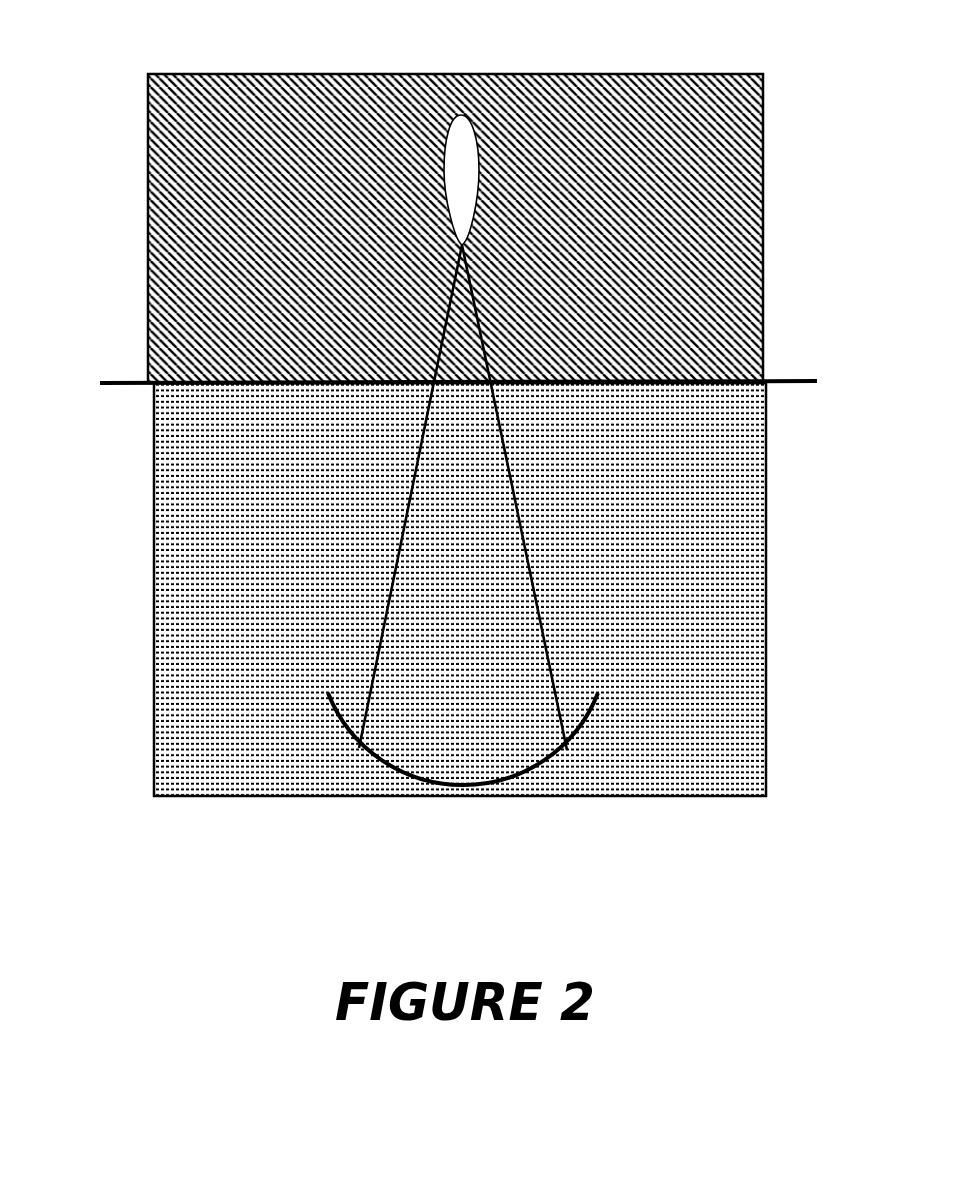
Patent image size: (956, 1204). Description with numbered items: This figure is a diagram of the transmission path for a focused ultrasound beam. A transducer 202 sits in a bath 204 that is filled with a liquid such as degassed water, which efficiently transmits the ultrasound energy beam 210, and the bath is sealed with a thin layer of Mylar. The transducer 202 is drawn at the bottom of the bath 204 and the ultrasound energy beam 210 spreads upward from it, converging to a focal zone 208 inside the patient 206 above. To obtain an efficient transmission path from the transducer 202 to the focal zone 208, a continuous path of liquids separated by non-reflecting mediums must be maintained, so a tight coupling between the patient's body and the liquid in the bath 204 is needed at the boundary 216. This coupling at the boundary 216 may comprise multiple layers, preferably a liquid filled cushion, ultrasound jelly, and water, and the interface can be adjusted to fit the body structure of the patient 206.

The transducer 202 is at (485, 782).
The bath 204 is at (132, 548).
The patient 206 is at (132, 254).
The focal zone 208 is at (453, 152).
The ultrasound energy beam 210 is at (524, 558).
The boundary 216 is at (762, 380).